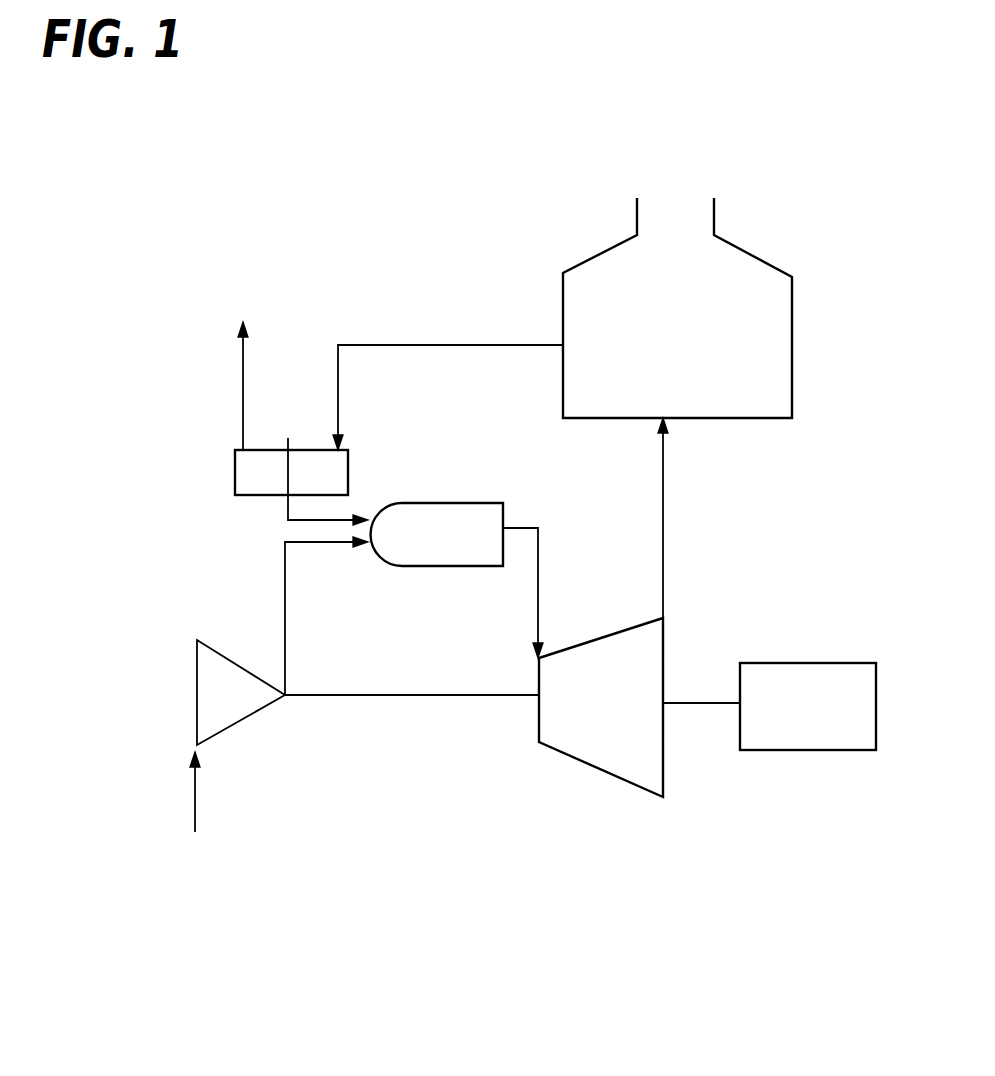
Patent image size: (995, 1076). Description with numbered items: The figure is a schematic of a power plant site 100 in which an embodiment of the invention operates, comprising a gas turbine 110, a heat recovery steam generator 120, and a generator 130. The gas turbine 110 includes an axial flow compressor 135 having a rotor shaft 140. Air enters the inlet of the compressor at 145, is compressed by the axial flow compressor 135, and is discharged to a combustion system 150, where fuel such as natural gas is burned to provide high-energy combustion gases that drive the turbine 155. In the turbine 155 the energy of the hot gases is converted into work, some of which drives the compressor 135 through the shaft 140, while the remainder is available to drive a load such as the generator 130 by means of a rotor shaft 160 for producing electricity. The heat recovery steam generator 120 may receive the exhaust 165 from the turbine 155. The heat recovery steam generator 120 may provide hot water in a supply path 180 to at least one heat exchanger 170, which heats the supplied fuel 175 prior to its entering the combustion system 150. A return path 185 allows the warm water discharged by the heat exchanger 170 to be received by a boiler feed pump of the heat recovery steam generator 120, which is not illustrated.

The power plant site 100 is at (240, 209).
The gas turbine 110 is at (331, 861).
The heat recovery steam generator 120 is at (655, 351).
The generator 130 is at (790, 720).
The axial flow compressor 135 is at (197, 667).
The rotor shaft 140 is at (403, 695).
The compressor inlet 145 is at (192, 810).
The combustion system 150 is at (407, 566).
The turbine 155 is at (587, 716).
The rotor shaft 160 is at (690, 703).
The exhaust 165 is at (663, 565).
The heat exchanger 170 is at (350, 472).
The supplied fuel 175 is at (316, 465).
The supply path 180 is at (402, 343).
The return path 185 is at (243, 397).